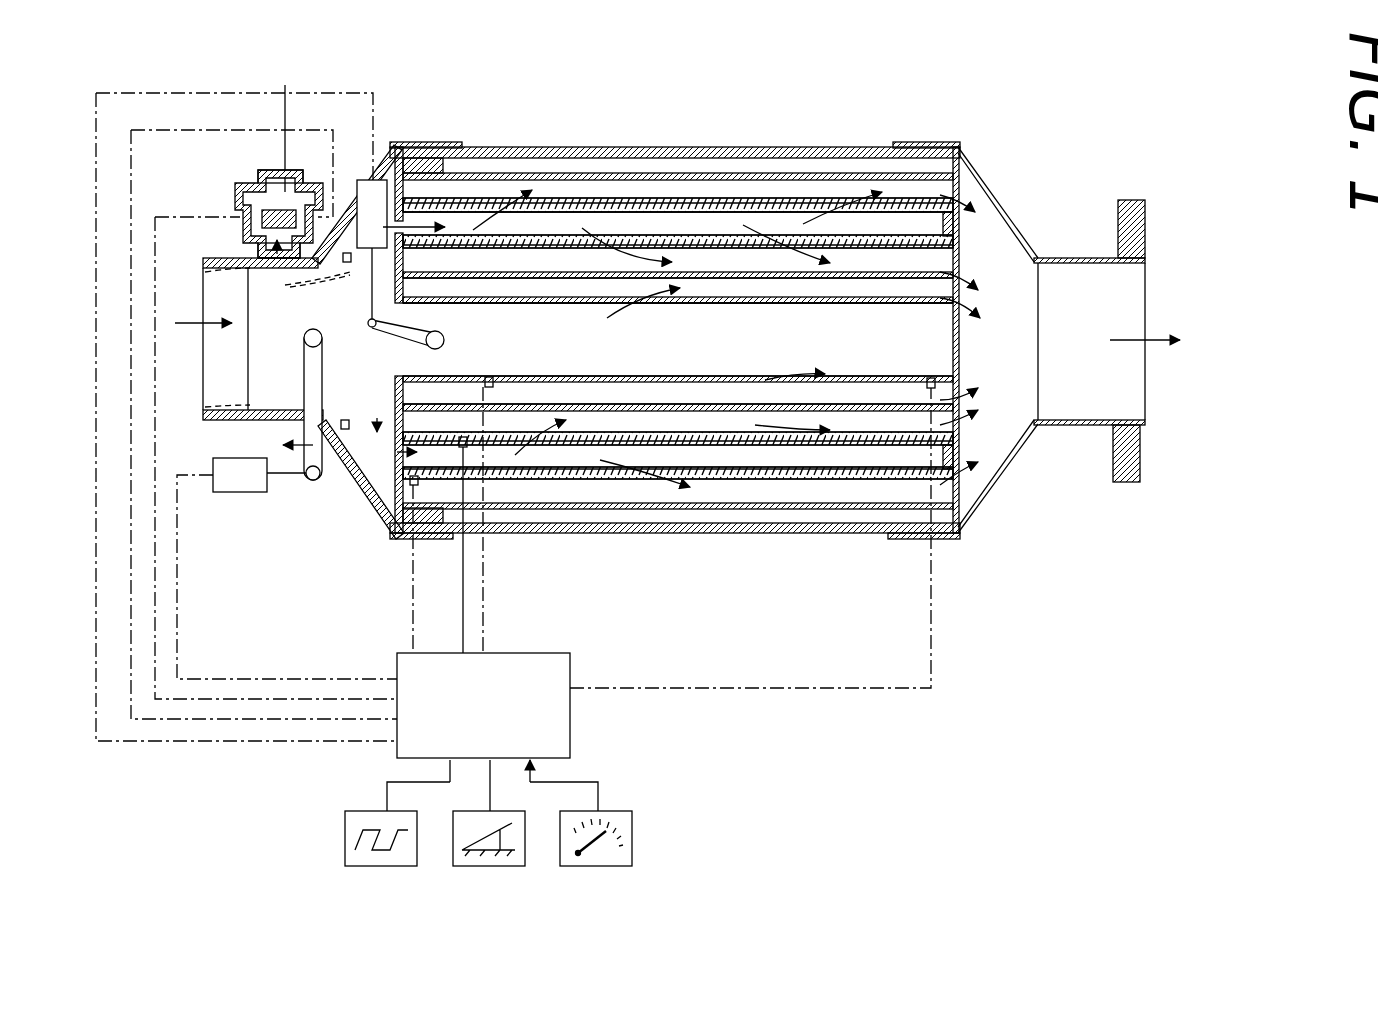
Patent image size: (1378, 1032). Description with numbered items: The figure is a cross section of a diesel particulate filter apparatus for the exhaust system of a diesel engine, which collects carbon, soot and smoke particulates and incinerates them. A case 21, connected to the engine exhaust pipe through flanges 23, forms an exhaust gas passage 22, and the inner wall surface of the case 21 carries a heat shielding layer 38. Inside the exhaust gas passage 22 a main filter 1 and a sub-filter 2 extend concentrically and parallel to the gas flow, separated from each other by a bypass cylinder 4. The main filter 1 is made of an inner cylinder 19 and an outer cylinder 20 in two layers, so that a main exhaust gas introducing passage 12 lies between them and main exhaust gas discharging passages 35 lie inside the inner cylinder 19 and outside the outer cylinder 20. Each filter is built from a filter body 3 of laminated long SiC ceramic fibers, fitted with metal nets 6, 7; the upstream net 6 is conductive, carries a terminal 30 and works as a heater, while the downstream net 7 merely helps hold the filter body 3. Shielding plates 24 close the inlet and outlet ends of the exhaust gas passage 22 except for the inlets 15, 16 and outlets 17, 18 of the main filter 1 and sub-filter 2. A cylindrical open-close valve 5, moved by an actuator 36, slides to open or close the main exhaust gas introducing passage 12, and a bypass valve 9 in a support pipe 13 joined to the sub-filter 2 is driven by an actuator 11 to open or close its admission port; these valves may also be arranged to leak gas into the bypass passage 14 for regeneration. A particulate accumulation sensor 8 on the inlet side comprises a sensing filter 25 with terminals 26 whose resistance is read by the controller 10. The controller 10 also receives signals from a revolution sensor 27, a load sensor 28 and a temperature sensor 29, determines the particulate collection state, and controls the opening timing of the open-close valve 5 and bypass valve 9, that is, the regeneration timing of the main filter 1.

The main filter 1 is at (850, 145).
The sub-filter 2 is at (780, 305).
The filter body 3 is at (853, 215).
The bypass cylinder 4 is at (960, 266).
The open-close valve 5 is at (207, 272).
The metal net 6 is at (652, 200).
The metal net 7 is at (553, 198).
The particulate accumulation sensor 8 is at (238, 183).
The bypass valve 9 is at (445, 310).
The controller 10 is at (452, 712).
The actuator 11 is at (355, 278).
The main exhaust gas introducing passage 12 is at (702, 150).
The support pipe 13 is at (395, 385).
The bypass passage 14 is at (664, 362).
The inlet 15 is at (388, 155).
The inlet 16 is at (362, 310).
The outlet 17 is at (973, 200).
The outlet 18 is at (965, 302).
The inner cylinder 19 is at (733, 235).
The outer cylinder 20 is at (626, 173).
The case 21 is at (440, 145).
The exhaust gas passage 22 is at (259, 344).
The flange 23 is at (1145, 212).
The shielding plate 24 is at (405, 500).
The sensing filter 25 is at (279, 112).
The terminal 26 is at (318, 205).
The revolution sensor 27 is at (345, 838).
The load sensor 28 is at (462, 866).
The temperature sensor 29 is at (632, 836).
The terminal 30 is at (955, 398).
The main exhaust gas discharging passage 35 is at (790, 185).
The actuator 36 is at (245, 492).
The heat shielding layer 38 is at (505, 150).